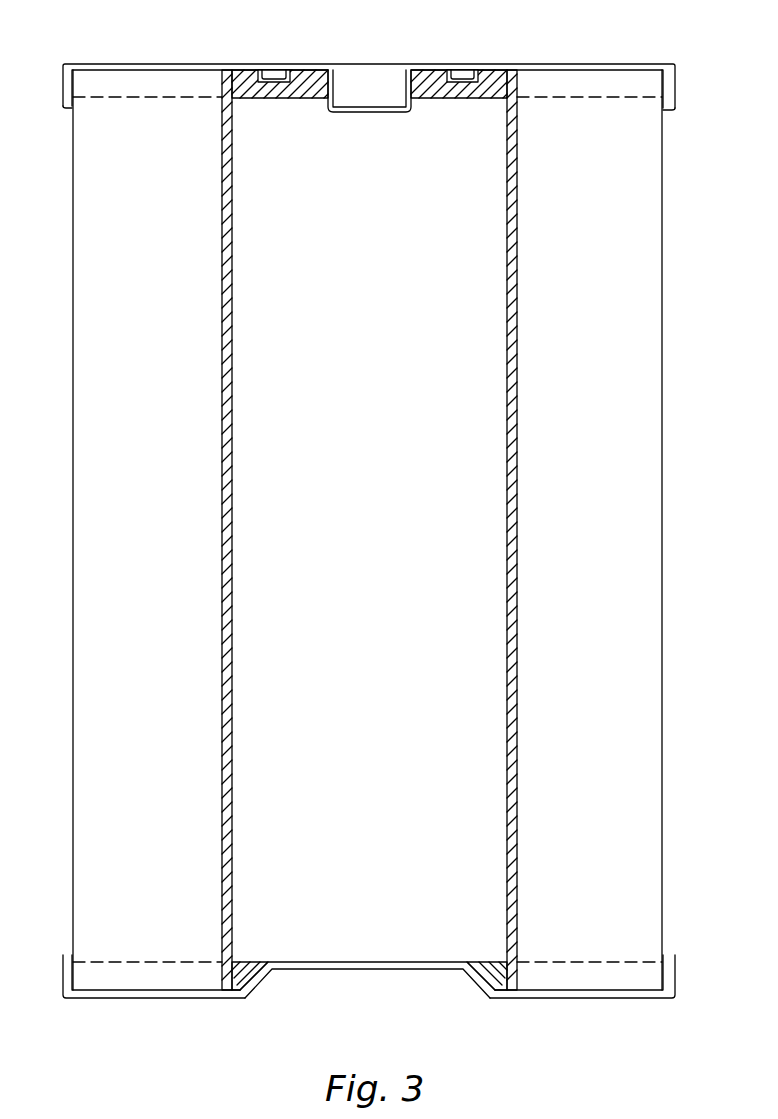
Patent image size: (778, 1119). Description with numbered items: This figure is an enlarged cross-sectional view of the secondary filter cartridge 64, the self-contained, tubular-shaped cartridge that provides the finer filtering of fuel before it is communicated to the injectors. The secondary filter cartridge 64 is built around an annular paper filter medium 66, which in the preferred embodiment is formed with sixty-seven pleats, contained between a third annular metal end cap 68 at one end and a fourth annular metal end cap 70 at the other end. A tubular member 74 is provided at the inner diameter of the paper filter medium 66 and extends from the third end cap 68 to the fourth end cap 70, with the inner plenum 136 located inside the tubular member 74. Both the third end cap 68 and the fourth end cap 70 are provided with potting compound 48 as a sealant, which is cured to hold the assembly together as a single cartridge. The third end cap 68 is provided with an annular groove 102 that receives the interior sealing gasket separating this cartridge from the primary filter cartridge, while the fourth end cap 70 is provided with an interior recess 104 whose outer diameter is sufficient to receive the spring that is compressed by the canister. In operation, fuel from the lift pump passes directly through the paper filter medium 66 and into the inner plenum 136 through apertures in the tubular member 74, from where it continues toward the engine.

The secondary filter cartridge 64 is at (182, 1020).
The paper filter medium 66 is at (108, 871).
The third end cap 68 is at (602, 65).
The fourth end cap 70 is at (613, 998).
The tubular member 74 is at (510, 693).
The potting compound 48 is at (470, 100).
The annular groove 102 is at (279, 70).
The interior recess 104 is at (388, 969).
The inner plenum 136 is at (401, 467).